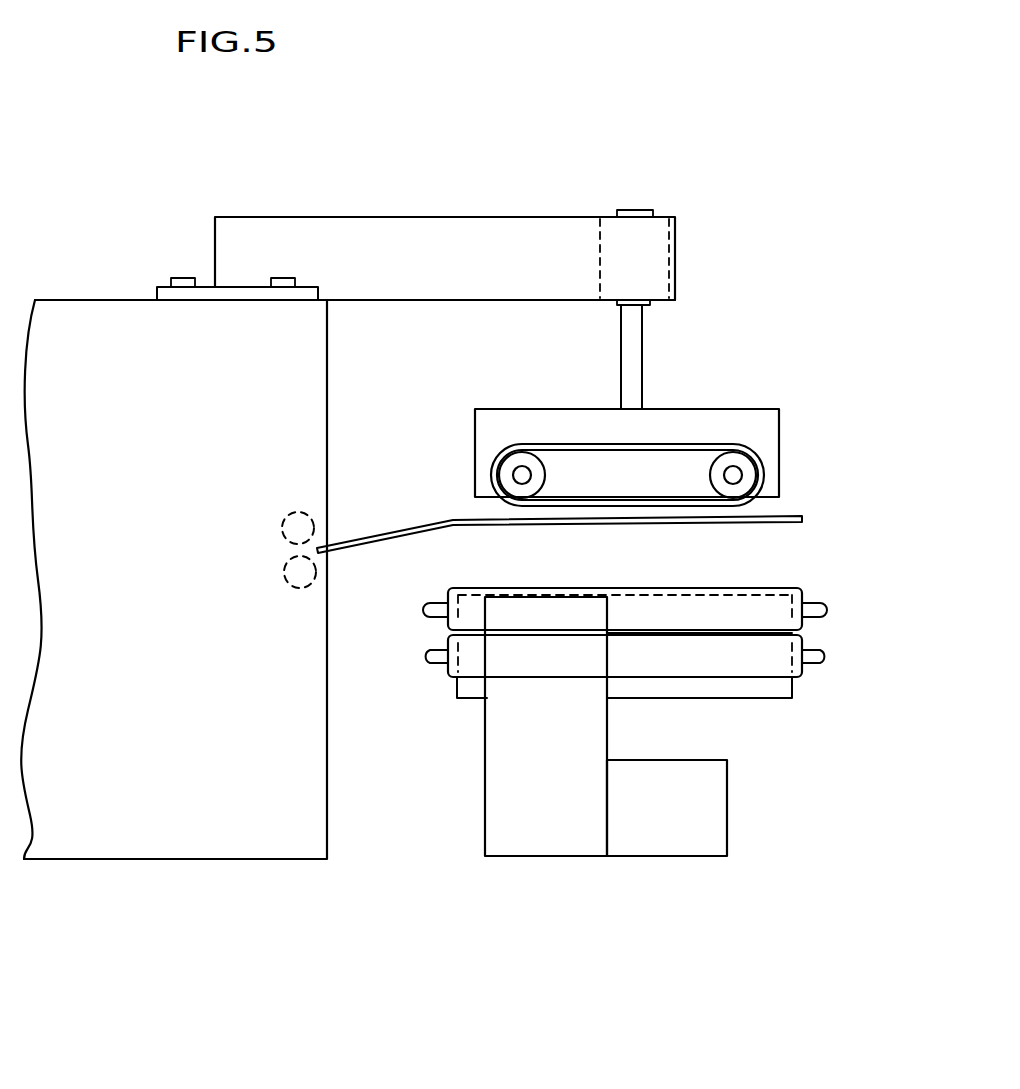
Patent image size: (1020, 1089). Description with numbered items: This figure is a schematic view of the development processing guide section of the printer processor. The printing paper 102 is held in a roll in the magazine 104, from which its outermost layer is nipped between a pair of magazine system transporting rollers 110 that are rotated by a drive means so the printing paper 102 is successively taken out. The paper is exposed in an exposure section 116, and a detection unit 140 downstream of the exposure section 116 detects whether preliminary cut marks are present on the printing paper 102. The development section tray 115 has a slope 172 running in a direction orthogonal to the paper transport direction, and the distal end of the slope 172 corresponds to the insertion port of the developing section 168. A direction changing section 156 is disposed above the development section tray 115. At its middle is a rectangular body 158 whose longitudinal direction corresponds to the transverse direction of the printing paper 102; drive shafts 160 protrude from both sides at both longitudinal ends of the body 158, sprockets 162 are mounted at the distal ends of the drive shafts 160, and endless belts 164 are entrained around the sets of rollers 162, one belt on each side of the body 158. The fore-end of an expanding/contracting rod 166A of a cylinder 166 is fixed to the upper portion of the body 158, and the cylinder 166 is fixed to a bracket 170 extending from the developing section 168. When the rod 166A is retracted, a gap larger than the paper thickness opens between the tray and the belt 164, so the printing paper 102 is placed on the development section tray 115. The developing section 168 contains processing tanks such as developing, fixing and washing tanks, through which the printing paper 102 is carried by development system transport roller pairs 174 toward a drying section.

The printing paper 102 is at (570, 525).
The magazine 104 is at (515, 843).
The magazine system transporting rollers 110 is at (800, 580).
The development section tray 115 is at (665, 514).
The exposure section 116 is at (688, 846).
The detection unit 140 is at (779, 692).
The direction changing section 156 is at (746, 373).
The body 158 is at (762, 425).
The drive shafts 160 is at (521, 477).
The pulley 162 is at (513, 457).
The endless belts 164 is at (553, 442).
The cylinder 166 is at (660, 258).
The expanding/contracting rod 166A is at (636, 333).
The developing section 168 is at (261, 859).
The bracket 170 is at (476, 238).
The slope 172 is at (409, 527).
The development system transport roller pairs 174 is at (293, 516).